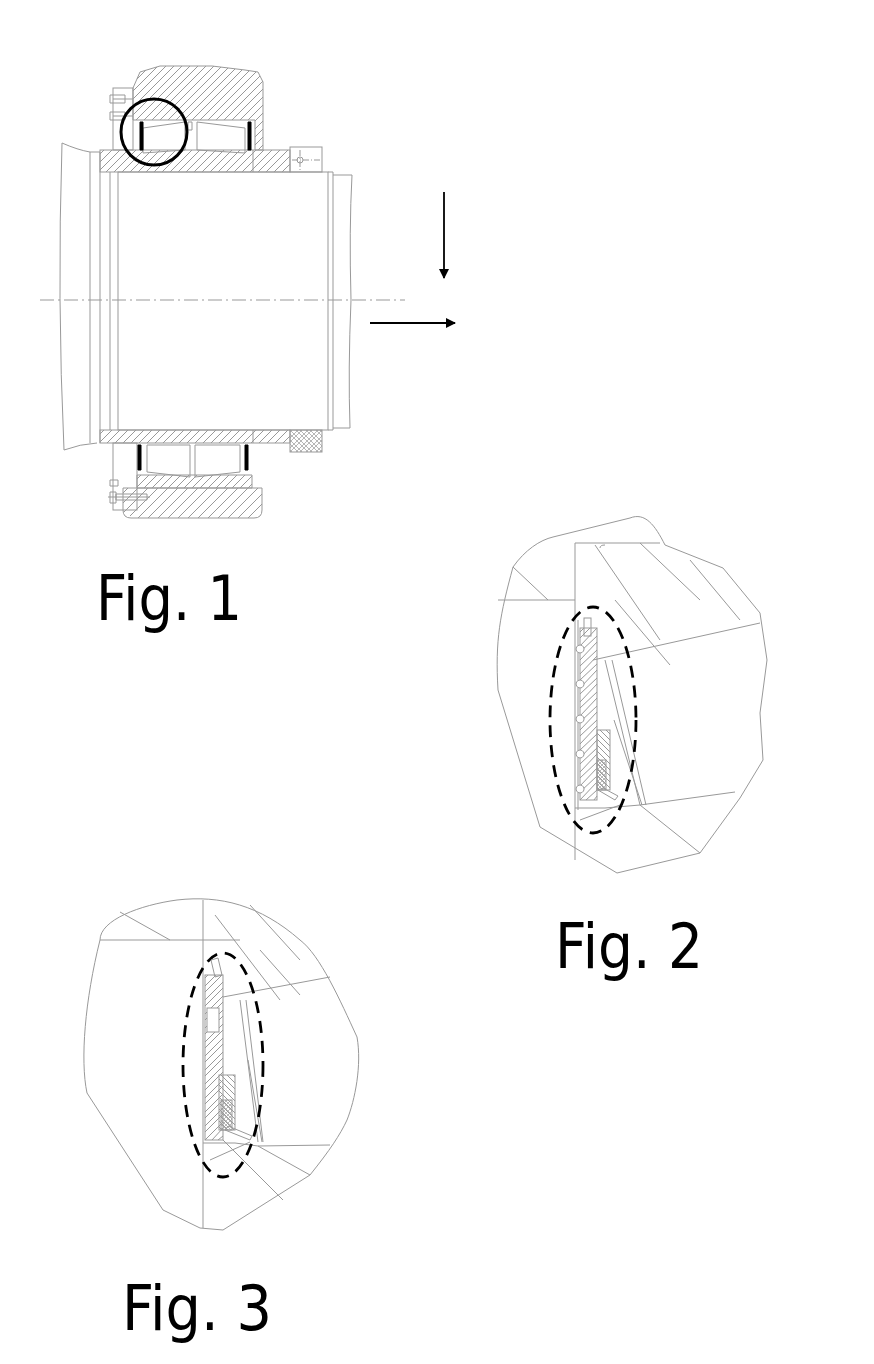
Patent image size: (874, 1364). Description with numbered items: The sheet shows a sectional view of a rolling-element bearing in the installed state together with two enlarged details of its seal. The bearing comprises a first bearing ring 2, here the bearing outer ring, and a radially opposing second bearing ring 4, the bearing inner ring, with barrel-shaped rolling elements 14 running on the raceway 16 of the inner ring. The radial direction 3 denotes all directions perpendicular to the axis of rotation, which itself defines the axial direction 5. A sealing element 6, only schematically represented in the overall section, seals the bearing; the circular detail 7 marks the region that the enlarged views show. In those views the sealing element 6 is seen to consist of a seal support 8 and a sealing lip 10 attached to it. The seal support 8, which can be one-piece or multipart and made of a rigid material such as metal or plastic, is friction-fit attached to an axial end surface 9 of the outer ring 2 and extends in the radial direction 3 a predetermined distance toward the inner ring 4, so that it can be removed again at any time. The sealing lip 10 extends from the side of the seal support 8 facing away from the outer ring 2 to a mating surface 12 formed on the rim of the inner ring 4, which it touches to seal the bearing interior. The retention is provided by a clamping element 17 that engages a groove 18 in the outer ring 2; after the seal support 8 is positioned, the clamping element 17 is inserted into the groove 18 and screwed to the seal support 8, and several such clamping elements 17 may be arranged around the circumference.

In FIG. 1, the first bearing ring 2 is at (143, 115).
In FIG. 2, the first bearing ring 2 is at (594, 570).
In FIG. 3, the first bearing ring 2 is at (223, 910).
In FIG. 1, the radial direction 3 is at (444, 213).
In FIG. 1, the second bearing ring 4 is at (177, 163).
In FIG. 2, the second bearing ring 4 is at (681, 833).
In FIG. 3, the second bearing ring 4 is at (310, 1177).
In FIG. 1, the axial direction 5 is at (395, 324).
In FIG. 1, the sealing element 6 is at (140, 140).
In FIG. 2, the sealing element 6 is at (553, 721).
In FIG. 3, the sealing element 6 is at (180, 1068).
In FIG. 1, the circular detail 7 is at (175, 110).
In FIG. 2, the seal support 8 is at (594, 718).
In FIG. 3, the seal support 8 is at (220, 1058).
In FIG. 2, the axial end surface 9 is at (575, 608).
In FIG. 3, the axial end surface 9 is at (203, 948).
In FIG. 2, the sealing lip 10 is at (596, 780).
In FIG. 3, the sealing lip 10 is at (222, 1125).
In FIG. 2, the mating surface 12 is at (608, 797).
In FIG. 3, the mating surface 12 is at (233, 1143).
In FIG. 2, the rolling elements 14 is at (732, 650).
In FIG. 3, the rolling elements 14 is at (333, 998).
In FIG. 2, the raceway 16 is at (708, 803).
In FIG. 3, the raceway 16 is at (333, 1145).
In FIG. 2, the clamping element 17 is at (586, 636).
In FIG. 3, the clamping element 17 is at (210, 1010).
In FIG. 2, the groove 18 is at (590, 636).
In FIG. 3, the groove 18 is at (218, 958).